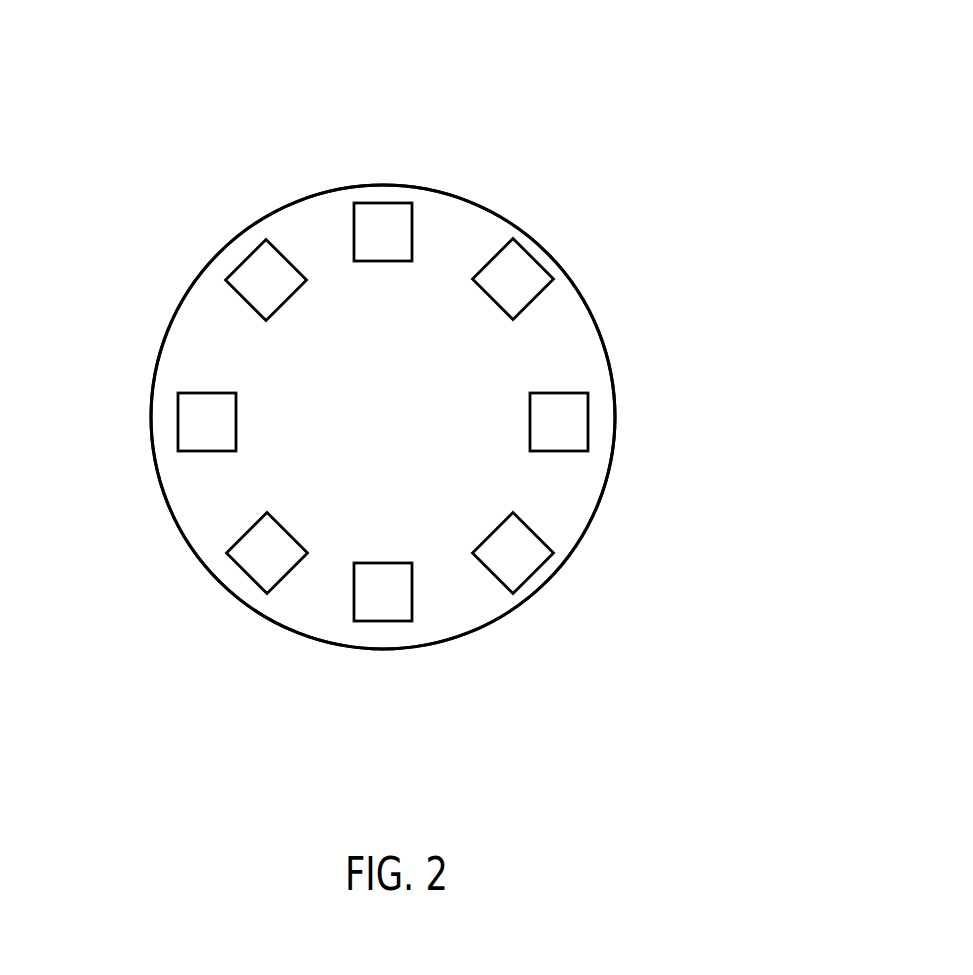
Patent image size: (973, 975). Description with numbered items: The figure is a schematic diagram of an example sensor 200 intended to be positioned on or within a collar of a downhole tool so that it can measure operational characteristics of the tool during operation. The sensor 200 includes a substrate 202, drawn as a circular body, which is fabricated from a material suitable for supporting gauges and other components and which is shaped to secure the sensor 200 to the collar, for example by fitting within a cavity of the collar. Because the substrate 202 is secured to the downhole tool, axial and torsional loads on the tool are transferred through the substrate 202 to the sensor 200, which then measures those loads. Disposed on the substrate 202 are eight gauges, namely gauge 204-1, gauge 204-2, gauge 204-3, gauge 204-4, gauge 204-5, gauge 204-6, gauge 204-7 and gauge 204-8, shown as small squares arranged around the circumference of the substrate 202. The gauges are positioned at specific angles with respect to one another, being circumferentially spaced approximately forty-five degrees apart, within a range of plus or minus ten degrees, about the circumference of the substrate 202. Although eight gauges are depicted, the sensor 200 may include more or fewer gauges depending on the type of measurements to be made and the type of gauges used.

The sensor 200 is at (835, 108).
The substrate 202 is at (508, 221).
The gauge 204-1 is at (377, 203).
The gauge 204-2 is at (553, 279).
The gauge 204-3 is at (588, 417).
The gauge 204-4 is at (553, 553).
The gauge 204-5 is at (390, 621).
The gauge 204-6 is at (250, 557).
The gauge 204-7 is at (178, 418).
The gauge 204-8 is at (250, 256).